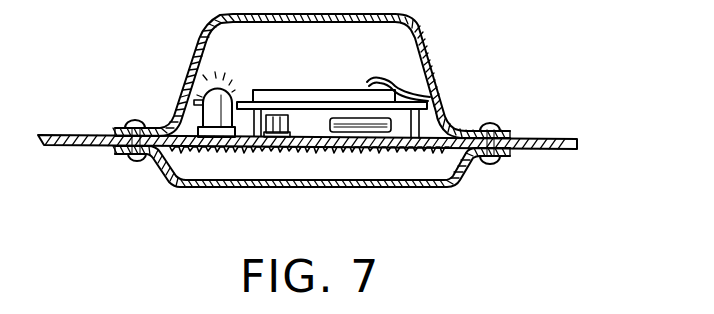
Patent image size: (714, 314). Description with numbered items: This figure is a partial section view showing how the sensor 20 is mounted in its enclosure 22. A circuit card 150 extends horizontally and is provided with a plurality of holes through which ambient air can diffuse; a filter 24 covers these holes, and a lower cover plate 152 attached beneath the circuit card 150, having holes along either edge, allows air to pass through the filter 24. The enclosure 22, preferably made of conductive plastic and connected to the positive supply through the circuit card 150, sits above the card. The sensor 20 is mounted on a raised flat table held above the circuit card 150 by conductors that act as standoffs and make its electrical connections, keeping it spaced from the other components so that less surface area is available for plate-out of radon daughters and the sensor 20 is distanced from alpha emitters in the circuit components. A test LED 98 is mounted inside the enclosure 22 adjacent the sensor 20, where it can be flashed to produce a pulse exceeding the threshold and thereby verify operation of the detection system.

The sensor 20 is at (277, 100).
The enclosure 22 is at (421, 26).
The filter 24 is at (365, 150).
The LED 98 is at (207, 113).
The circuit card 150 is at (537, 140).
The lower cover plate 152 is at (200, 187).